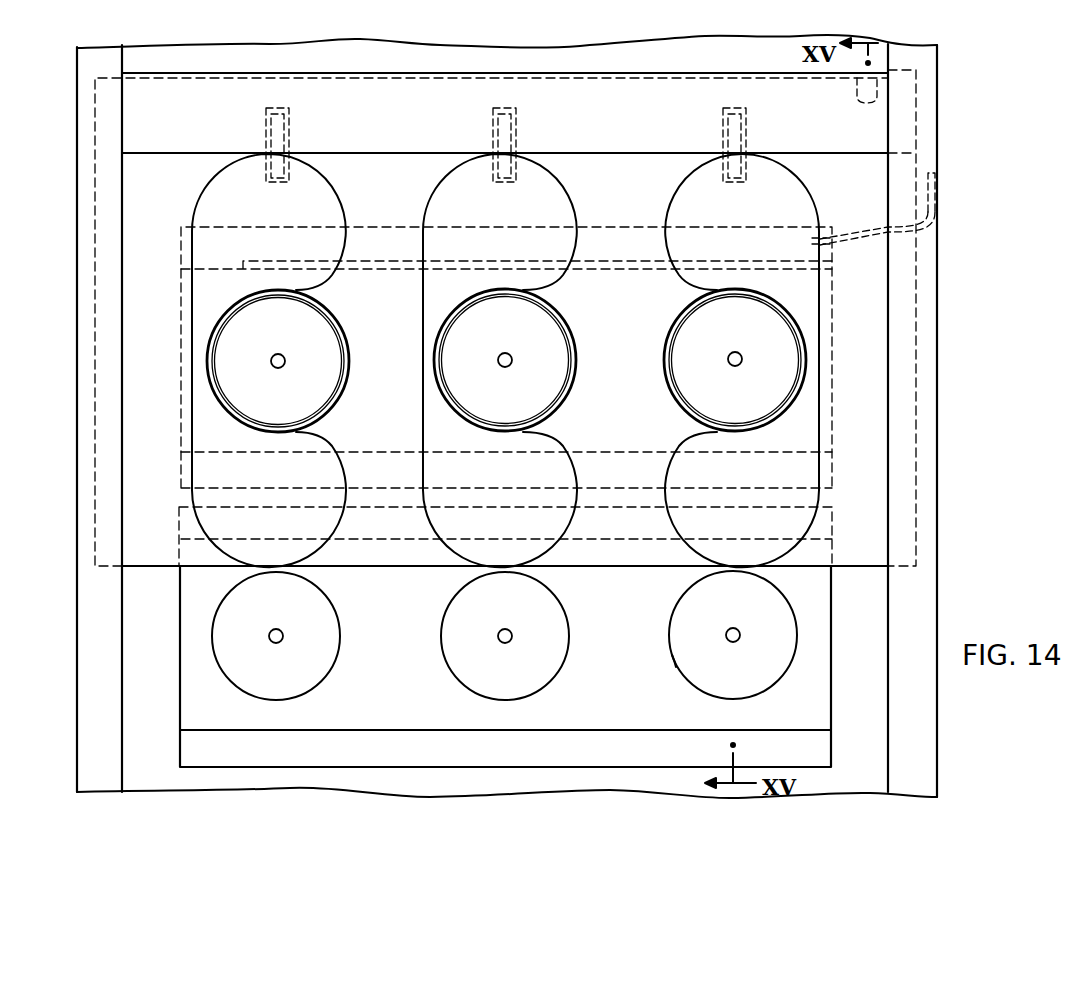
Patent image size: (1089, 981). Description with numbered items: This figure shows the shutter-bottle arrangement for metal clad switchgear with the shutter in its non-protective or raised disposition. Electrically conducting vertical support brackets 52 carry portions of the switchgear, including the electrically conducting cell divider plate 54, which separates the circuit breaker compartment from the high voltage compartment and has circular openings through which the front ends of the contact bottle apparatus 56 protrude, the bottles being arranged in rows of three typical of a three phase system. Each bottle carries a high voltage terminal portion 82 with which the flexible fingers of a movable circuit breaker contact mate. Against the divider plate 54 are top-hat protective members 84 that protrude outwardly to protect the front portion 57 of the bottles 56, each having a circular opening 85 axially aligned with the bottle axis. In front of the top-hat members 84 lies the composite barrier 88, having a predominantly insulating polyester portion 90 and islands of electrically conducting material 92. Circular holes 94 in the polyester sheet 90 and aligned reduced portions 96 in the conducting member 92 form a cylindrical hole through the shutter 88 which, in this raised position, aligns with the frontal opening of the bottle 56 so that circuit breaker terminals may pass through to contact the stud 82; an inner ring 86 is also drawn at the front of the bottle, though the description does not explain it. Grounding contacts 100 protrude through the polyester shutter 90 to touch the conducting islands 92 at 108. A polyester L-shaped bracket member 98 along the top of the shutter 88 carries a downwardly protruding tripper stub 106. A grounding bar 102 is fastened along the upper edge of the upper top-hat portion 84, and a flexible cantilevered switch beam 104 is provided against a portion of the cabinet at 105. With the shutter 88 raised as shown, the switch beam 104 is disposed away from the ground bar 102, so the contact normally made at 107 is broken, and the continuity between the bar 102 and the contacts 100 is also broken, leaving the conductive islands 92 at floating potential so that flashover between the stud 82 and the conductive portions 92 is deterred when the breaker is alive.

The vertical support bracket 52 is at (937, 468).
The cell divider plate 54 is at (140, 61).
The contact bottle apparatus 56 is at (721, 360).
The front portion of the bottle 57 is at (676, 620).
The terminal portion 82 is at (719, 346).
The top-hat protective member 84 is at (831, 428).
The circular opening 85 is at (684, 659).
The ring 86 is at (676, 368).
The composite barrier 88 is at (845, 556).
The polyester portion 90 is at (140, 122).
The islands of electrically conducting material 92 is at (790, 277).
The circular hole 94 is at (797, 392).
The reduced portion 96 is at (683, 399).
The L-shaped bracket member 98 is at (268, 74).
The grounding contact 100 is at (506, 112).
The grounding bar 102 is at (607, 258).
The flexible cantilevered switch beam 104 is at (937, 232).
The cabinet support portion 105 is at (936, 185).
The tripper stub 106 is at (866, 105).
The contact point 107 is at (818, 241).
The contact location 108 is at (748, 168).